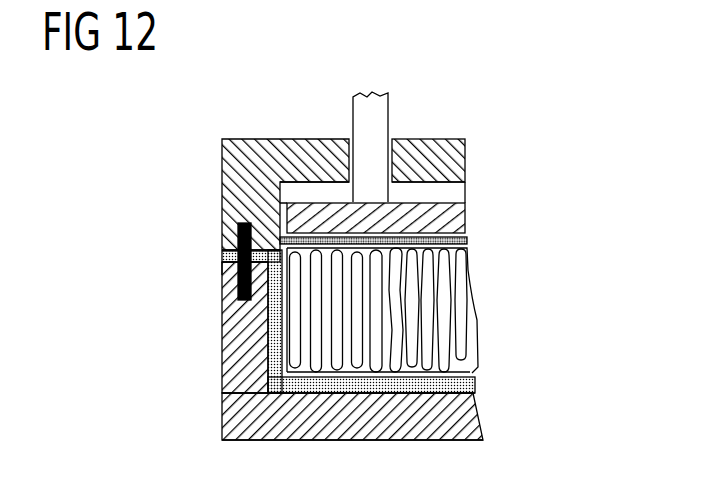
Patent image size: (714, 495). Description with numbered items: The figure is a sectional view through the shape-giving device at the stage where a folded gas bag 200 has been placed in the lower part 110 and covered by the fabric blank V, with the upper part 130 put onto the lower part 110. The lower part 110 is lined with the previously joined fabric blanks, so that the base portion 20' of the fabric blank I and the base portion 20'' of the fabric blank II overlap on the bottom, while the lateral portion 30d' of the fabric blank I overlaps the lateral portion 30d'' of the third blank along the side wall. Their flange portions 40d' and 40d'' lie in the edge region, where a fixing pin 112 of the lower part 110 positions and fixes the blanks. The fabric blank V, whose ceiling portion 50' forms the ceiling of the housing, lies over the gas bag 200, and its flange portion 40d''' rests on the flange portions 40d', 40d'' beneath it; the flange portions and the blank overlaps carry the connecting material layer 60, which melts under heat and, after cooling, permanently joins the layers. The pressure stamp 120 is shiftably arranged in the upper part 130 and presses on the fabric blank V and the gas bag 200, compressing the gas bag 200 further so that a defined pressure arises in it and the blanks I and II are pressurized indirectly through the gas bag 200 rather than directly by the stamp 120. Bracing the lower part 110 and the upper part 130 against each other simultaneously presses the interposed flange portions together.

The fixing pin 112 is at (238, 223).
The ceiling portion of fabric blank V 50' is at (372, 140).
The upper part 130 is at (430, 160).
The pressure stamp 120 is at (467, 213).
The fabric blank V is at (467, 240).
The folded gas bag 200 is at (457, 297).
The fabric blank II is at (474, 373).
The connecting material layer 60 is at (476, 382).
The fabric blank I is at (473, 391).
The flange portion of fabric blank V 40d''' is at (221, 198).
The flange portion of fabric blank III 40d'' is at (209, 242).
The flange portion of fabric blank I 40d' is at (201, 283).
The lateral portion of fabric blank III 30d'' is at (203, 327).
The lateral portion of fabric blank I 30d' is at (217, 336).
The base portion of fabric blank II 20'' is at (286, 467).
The lower part 110 is at (392, 440).
The base portion of fabric blank I 20' is at (416, 467).